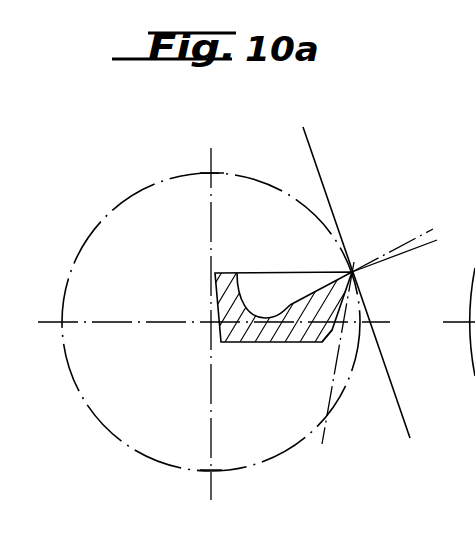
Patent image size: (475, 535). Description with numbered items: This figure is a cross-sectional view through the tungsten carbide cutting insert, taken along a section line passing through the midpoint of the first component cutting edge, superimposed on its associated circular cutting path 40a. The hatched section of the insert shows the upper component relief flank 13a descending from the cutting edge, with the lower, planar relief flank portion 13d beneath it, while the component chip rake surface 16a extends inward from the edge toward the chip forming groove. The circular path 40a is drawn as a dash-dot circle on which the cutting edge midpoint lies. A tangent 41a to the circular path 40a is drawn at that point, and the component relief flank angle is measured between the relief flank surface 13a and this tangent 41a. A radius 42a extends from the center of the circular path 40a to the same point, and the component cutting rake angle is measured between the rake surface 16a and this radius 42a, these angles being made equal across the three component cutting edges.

The circular path 40a is at (133, 188).
The tangent 41a is at (326, 168).
The radius 42a is at (263, 293).
The component chip rake surface 16a is at (298, 293).
The upper component relief flank 13a is at (346, 291).
The lower planar relief flank portion 13d is at (333, 334).